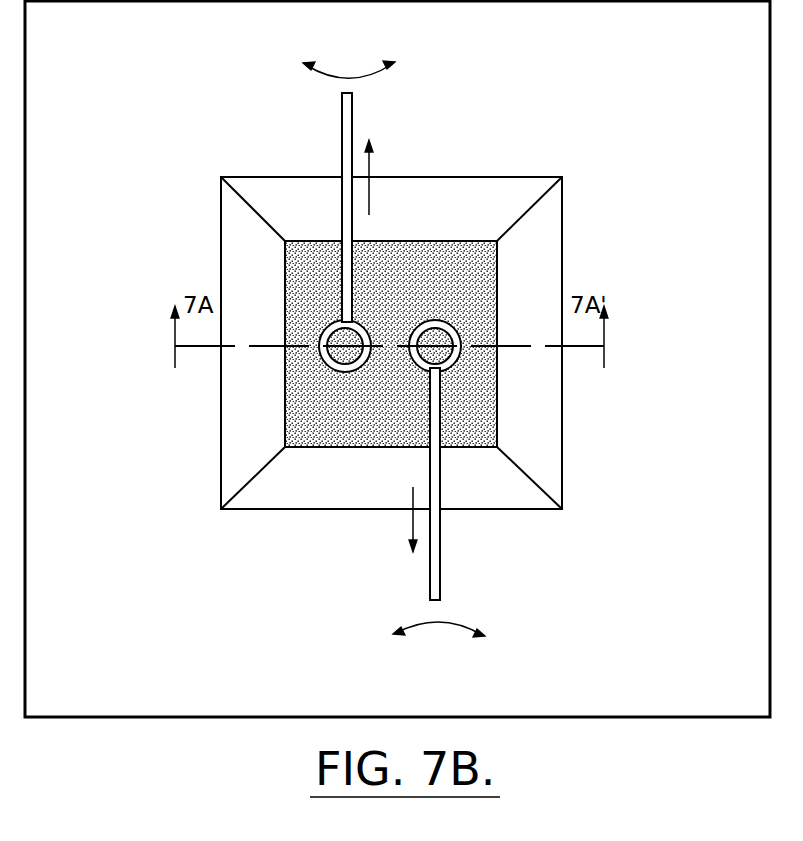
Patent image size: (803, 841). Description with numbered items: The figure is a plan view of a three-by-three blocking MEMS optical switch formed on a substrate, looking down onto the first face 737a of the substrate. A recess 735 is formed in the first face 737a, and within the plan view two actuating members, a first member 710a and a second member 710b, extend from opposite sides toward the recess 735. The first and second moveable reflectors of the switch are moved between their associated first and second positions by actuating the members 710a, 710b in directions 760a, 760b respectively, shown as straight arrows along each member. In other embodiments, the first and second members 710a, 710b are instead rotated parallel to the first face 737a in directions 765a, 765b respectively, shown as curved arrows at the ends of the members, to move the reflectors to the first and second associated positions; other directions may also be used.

The first actuating member 710a is at (352, 128).
The second actuating member 710b is at (441, 556).
The recess 735 is at (440, 241).
The first face 737a is at (695, 700).
The first actuation direction 760a is at (372, 168).
The second actuation direction 760b is at (410, 535).
The first rotation direction 765a is at (350, 76).
The second rotation direction 765b is at (438, 624).